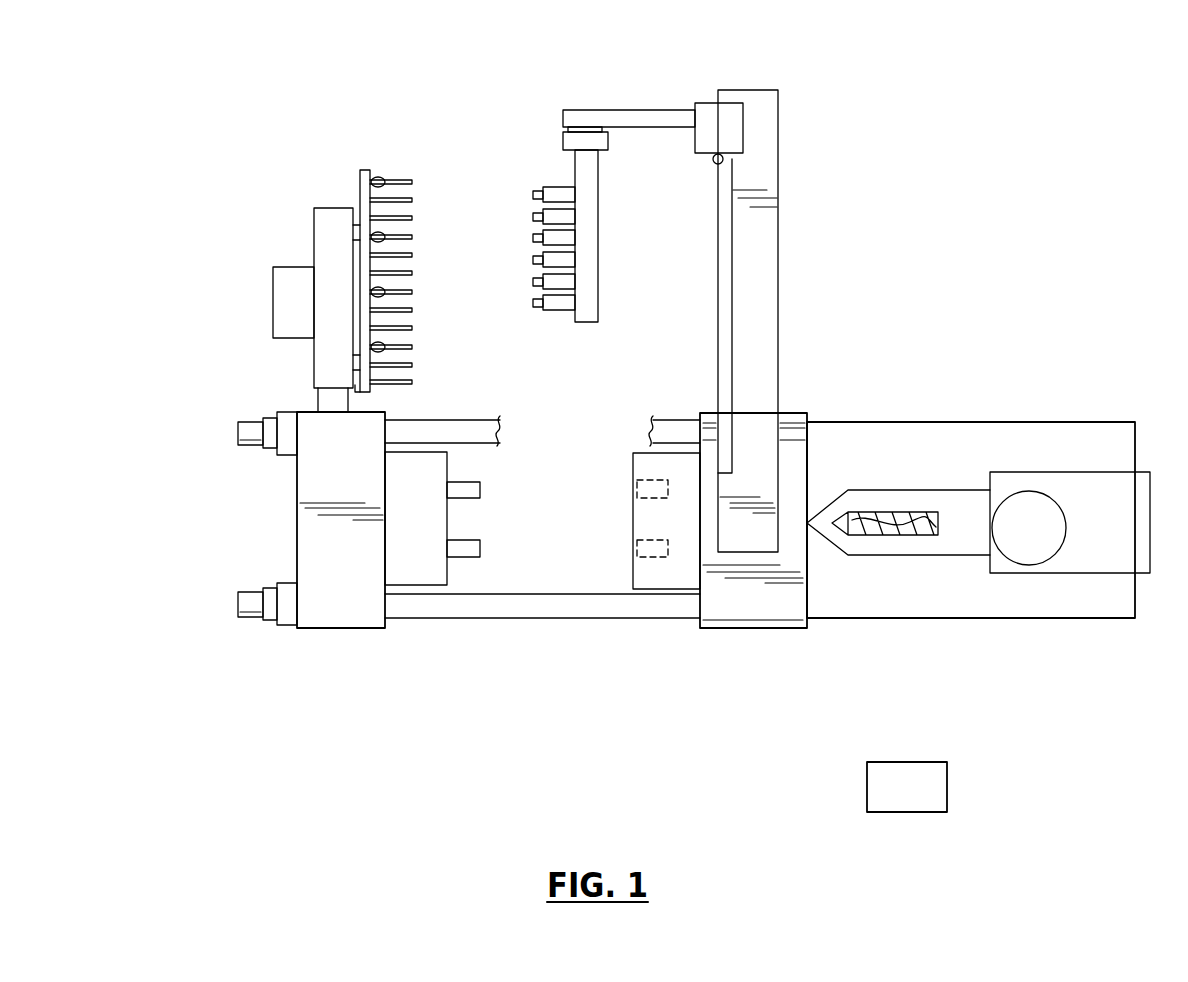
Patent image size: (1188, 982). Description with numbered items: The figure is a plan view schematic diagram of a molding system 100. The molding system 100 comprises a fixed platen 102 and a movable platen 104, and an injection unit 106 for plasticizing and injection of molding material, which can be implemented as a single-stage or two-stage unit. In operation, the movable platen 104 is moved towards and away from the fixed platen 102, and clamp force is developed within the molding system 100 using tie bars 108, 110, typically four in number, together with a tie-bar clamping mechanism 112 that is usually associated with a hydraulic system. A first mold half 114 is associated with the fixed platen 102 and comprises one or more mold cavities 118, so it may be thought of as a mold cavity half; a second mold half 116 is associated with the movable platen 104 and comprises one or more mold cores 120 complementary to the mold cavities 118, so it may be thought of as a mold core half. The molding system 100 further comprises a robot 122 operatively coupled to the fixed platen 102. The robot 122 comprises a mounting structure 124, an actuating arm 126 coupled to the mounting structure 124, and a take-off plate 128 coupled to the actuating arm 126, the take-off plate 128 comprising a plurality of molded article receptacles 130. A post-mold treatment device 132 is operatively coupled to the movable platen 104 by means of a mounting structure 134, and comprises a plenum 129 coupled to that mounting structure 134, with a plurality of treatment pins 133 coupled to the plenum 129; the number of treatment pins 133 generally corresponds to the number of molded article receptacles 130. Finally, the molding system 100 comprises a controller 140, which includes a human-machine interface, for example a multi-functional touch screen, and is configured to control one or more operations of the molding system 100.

The molding system 100 is at (1035, 270).
The fixed platen 102 is at (740, 613).
The movable platen 104 is at (330, 612).
The injection unit 106 is at (928, 607).
The tie bars 108 is at (478, 425).
The tie bars 110 is at (568, 608).
The tie-bar clamping mechanism 112 is at (287, 448).
The first mold half 114 is at (685, 572).
The second mold half 116 is at (410, 570).
The mold cavities 118 is at (637, 548).
The mold cores 120 is at (480, 540).
The robot 122 is at (581, 92).
The mounting structure 124 is at (770, 272).
The actuating arm 126 is at (644, 115).
The take-off plate 128 is at (590, 243).
The plenum 129 is at (322, 233).
The molded article receptacles 130 is at (555, 187).
The post-mold treatment device 132 is at (250, 182).
The treatment pins 133 is at (393, 180).
The mounting structure 134 is at (318, 405).
The controller 140 is at (768, 628).